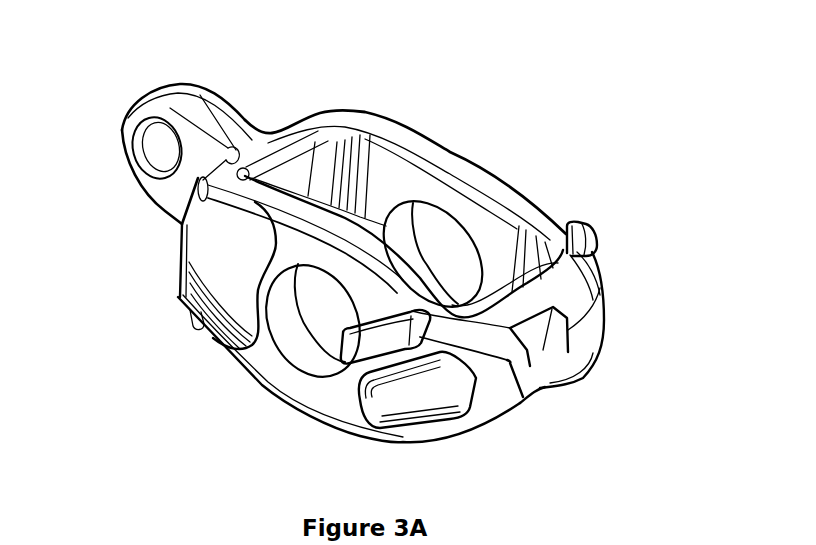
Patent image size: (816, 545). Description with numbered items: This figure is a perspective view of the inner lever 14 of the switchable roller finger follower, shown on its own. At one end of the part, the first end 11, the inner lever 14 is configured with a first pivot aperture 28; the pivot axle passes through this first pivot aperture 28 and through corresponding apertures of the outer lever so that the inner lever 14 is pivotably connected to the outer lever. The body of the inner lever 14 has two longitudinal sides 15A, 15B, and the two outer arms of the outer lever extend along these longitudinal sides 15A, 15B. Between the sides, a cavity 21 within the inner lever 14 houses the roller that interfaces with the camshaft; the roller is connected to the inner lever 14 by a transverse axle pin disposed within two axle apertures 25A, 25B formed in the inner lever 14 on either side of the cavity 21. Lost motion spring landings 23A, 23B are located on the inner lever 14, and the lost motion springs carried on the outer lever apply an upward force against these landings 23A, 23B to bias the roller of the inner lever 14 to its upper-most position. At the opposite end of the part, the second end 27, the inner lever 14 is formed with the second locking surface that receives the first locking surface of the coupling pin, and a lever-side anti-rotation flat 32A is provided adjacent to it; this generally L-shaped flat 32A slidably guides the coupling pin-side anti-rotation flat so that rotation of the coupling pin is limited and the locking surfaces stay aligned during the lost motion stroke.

The first end 11 is at (157, 88).
The inner lever 14 is at (623, 98).
The longitudinal side 15A is at (393, 122).
The longitudinal side 15B is at (290, 235).
The cavity 21 is at (387, 172).
The lost motion spring landing 23A is at (597, 242).
The lost motion spring landing 23B is at (366, 342).
The axle aperture 25A is at (403, 243).
The axle aperture 25B is at (283, 300).
The second end 27 is at (519, 402).
The first pivot aperture 28 is at (163, 153).
The lever-side anti-rotation flat 32A is at (553, 355).